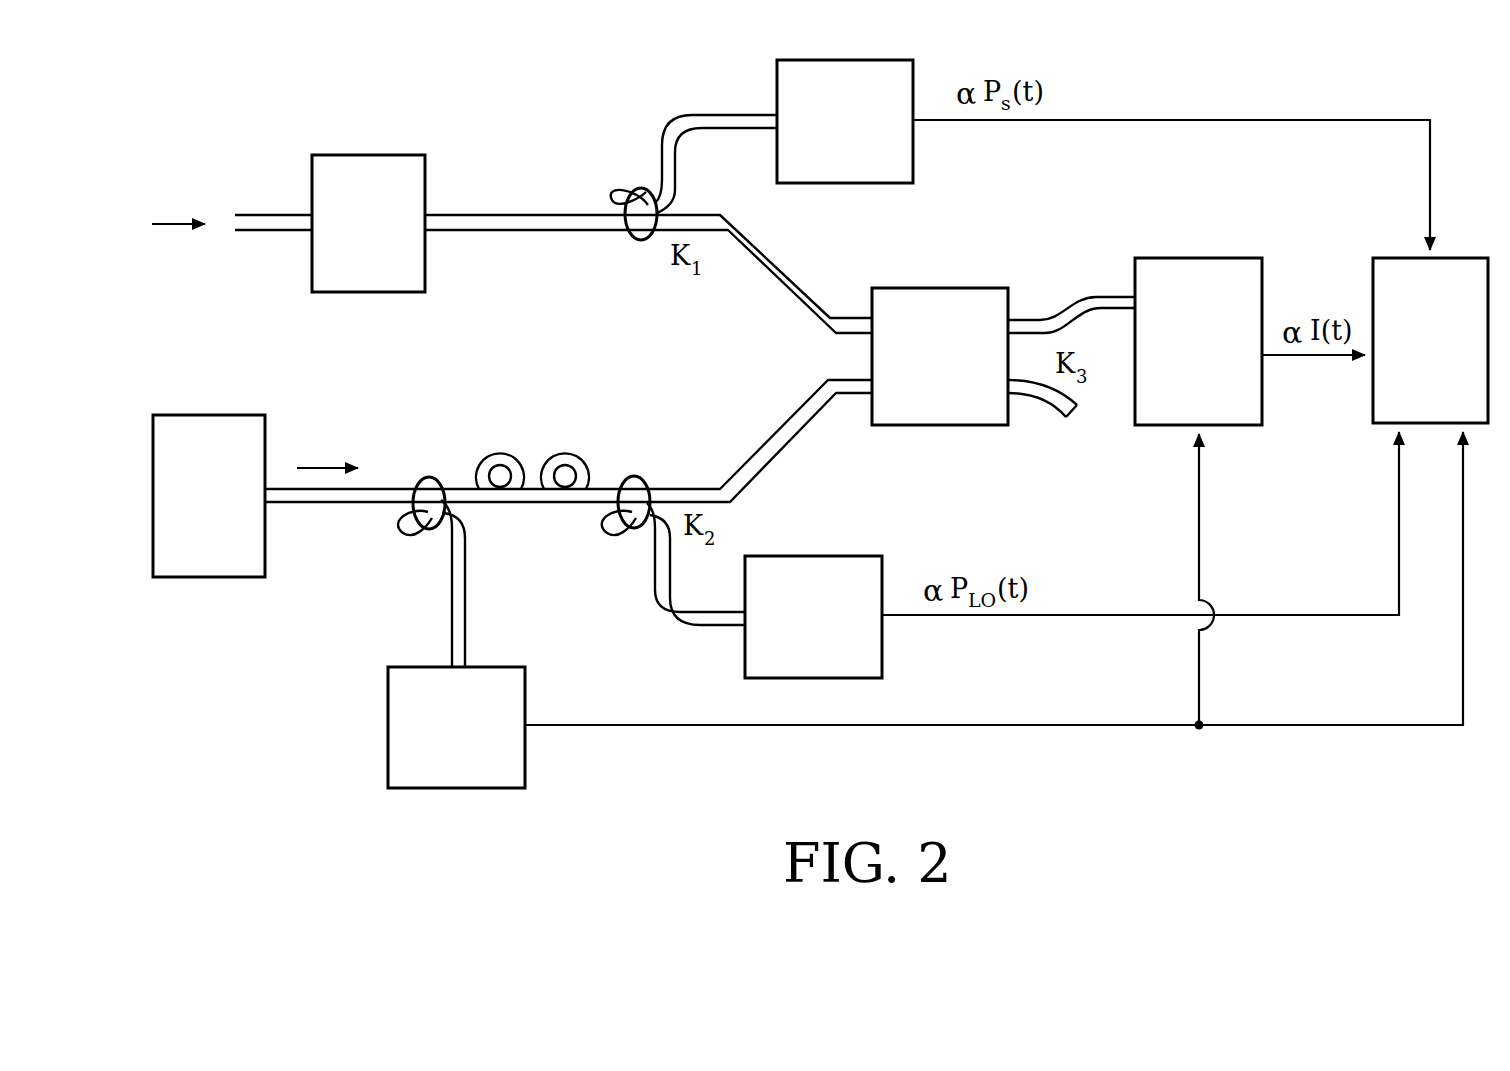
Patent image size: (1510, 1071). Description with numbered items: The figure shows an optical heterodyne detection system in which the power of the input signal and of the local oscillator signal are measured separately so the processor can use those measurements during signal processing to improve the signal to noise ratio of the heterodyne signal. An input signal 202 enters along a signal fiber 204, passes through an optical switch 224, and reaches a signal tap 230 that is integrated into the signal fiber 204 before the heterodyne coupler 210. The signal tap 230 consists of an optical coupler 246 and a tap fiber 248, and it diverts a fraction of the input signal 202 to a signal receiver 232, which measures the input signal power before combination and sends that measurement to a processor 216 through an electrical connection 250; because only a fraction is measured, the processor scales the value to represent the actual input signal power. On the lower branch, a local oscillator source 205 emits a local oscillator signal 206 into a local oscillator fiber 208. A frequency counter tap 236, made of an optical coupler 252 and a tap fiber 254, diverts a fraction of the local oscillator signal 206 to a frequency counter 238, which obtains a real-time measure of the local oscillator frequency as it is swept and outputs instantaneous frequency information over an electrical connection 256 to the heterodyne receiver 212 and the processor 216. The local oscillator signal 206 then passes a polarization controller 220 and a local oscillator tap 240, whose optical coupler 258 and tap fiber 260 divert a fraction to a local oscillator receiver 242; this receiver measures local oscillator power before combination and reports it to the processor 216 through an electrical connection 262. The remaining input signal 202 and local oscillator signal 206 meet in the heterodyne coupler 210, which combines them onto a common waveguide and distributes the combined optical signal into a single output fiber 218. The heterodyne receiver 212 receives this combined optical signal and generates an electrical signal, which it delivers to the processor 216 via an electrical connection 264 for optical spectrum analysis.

The input signal 202 is at (190, 169).
The signal fiber 204 is at (497, 213).
The local oscillator source 205 is at (209, 496).
The local oscillator signal 206 is at (330, 402).
The local oscillator fiber 208 is at (768, 472).
The heterodyne coupler 210 is at (972, 356).
The heterodyne receiver 212 is at (1216, 402).
The processor 216 is at (1430, 340).
The output fiber 218 is at (1092, 294).
The polarization controller 220 is at (533, 428).
The optical switch 224 is at (351, 268).
The signal tap 230 is at (641, 258).
The signal receiver 232 is at (845, 121).
The frequency counter tap 236 is at (431, 438).
The frequency counter 238 is at (439, 772).
The local oscillator tap 240 is at (636, 438).
The local oscillator receiver 242 is at (796, 662).
The optical coupler 246 is at (641, 188).
The tap fiber 248 is at (677, 112).
The electrical connection 250 is at (1327, 123).
The optical coupler 252 is at (421, 536).
The tap fiber 254 is at (450, 620).
The electrical connection 256 is at (1307, 733).
The optical coupler 258 is at (625, 536).
The tap fiber 260 is at (680, 628).
The electrical connection 262 is at (1301, 613).
The electrical connection 264 is at (1324, 365).